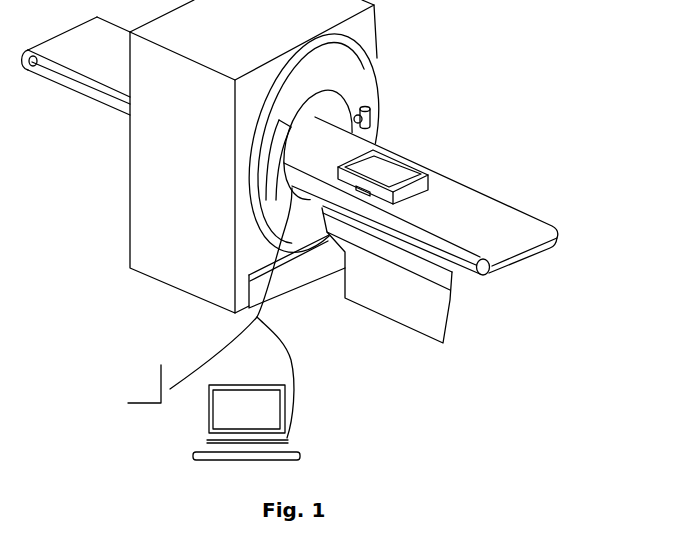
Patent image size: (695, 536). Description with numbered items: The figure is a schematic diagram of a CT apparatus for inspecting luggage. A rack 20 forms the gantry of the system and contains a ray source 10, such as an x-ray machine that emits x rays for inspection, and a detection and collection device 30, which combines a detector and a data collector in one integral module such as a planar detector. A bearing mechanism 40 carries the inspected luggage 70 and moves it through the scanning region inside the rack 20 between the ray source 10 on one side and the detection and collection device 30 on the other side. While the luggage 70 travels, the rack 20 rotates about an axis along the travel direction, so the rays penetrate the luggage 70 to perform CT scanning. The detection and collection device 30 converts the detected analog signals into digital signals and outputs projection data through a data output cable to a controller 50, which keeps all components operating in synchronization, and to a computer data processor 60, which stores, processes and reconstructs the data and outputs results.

The ray source 10 is at (371, 112).
The rack 20 is at (355, 70).
The detection and collection device 30 is at (273, 183).
The bearing mechanism 40 is at (440, 219).
The controller 50 is at (128, 386).
The computer data processor 60 is at (193, 455).
The inspected luggage 70 is at (390, 170).